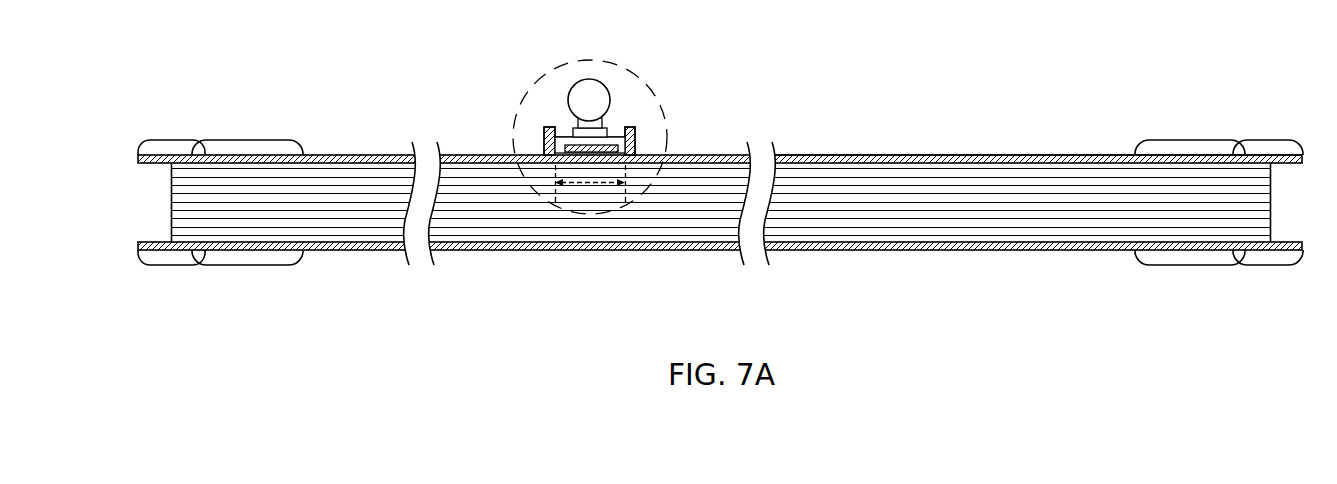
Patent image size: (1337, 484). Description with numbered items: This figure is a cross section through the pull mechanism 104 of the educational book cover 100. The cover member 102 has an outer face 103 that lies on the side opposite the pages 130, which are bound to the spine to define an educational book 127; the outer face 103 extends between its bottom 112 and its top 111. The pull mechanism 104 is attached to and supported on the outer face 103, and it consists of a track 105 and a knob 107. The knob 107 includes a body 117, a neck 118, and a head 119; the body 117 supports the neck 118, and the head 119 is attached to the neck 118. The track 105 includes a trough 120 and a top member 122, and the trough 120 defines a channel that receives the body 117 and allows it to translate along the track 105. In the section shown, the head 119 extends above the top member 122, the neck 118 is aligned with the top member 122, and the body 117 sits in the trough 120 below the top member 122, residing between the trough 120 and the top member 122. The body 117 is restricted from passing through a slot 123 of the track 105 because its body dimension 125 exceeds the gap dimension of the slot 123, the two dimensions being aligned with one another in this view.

The educational book cover 100 is at (1120, 103).
The cover member 102 is at (862, 151).
The outer face 103 is at (898, 155).
The pull mechanism 104 is at (687, 72).
The track 105 is at (641, 142).
The knob 107 is at (613, 86).
The top 111 is at (1302, 162).
The bottom 112 is at (138, 160).
The body 117 is at (560, 145).
The neck 118 is at (600, 133).
The head 119 is at (590, 78).
The trough 120 is at (606, 134).
The top member 122 is at (560, 128).
The slot 123 is at (577, 120).
The body dimension 125 is at (590, 189).
The educational book 127 is at (320, 101).
The pages 130 is at (183, 198).